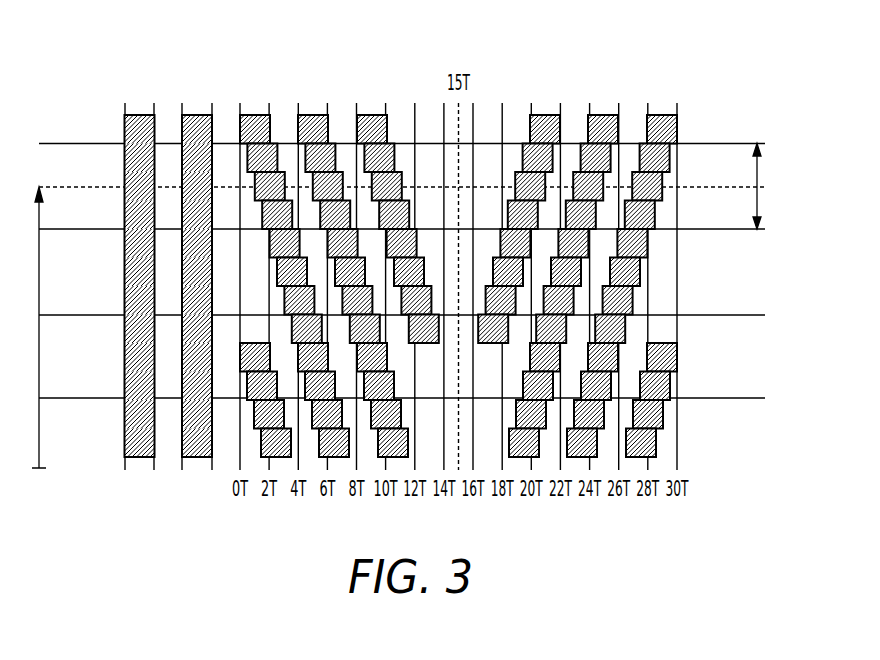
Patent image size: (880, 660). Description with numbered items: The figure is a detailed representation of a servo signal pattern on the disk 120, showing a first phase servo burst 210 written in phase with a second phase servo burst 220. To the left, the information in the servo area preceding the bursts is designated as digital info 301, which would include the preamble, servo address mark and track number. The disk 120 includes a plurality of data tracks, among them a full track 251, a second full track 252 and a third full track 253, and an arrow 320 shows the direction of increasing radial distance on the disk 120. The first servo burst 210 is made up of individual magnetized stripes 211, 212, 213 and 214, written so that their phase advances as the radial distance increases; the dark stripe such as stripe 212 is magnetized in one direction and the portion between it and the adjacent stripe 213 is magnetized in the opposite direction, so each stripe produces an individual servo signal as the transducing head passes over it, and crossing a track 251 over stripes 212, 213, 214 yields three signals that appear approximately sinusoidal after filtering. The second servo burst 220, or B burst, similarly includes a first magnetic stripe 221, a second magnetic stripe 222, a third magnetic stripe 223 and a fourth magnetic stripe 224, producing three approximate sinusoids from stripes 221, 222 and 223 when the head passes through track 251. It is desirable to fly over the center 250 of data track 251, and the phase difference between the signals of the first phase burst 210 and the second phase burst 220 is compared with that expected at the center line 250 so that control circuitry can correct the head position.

The disk 120 is at (168, 461).
The digital info 301 is at (195, 110).
The first phase servo burst 210 is at (284, 42).
The magnetized stripe 211 is at (258, 343).
The magnetized stripe 212 is at (253, 112).
The magnetized stripe 213 is at (311, 112).
The magnetized stripe 214 is at (370, 112).
The second phase servo burst 220 is at (628, 40).
The first magnetic stripe 221 is at (543, 112).
The second magnetic stripe 222 is at (601, 112).
The third magnetic stripe 223 is at (660, 112).
The fourth magnetic stripe 224 is at (664, 343).
The center line of the track 250 is at (738, 188).
The full track 251 is at (798, 187).
The second full track 252 is at (687, 271).
The third full track 253 is at (687, 357).
The arrow 320 is at (39, 466).